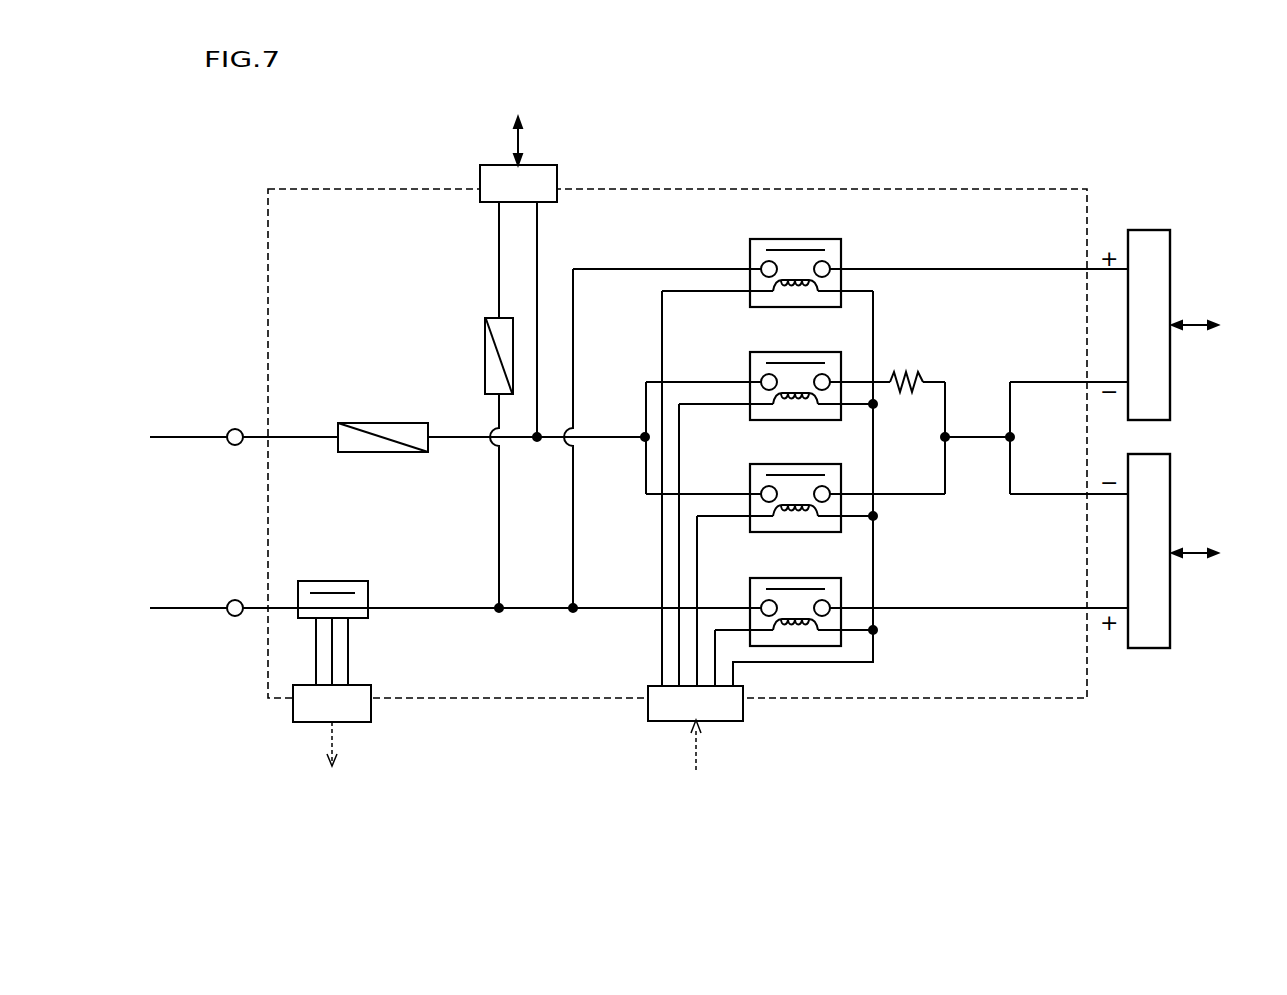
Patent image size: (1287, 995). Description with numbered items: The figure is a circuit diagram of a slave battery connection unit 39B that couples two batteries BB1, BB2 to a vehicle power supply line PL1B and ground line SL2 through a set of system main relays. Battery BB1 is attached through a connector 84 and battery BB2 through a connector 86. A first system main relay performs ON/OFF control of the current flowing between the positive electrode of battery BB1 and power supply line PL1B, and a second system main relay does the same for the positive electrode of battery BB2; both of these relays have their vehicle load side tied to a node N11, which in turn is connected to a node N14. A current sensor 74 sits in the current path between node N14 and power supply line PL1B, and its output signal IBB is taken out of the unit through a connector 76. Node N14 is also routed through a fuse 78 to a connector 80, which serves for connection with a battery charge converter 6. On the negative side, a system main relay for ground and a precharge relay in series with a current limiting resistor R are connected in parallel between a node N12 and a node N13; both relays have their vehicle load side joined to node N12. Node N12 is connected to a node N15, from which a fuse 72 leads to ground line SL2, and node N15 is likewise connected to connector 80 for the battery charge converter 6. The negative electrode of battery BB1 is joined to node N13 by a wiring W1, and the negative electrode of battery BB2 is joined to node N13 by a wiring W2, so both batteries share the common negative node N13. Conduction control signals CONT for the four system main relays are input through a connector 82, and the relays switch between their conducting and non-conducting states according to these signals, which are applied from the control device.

The battery charge converter 6 is at (518, 128).
The slave battery connection unit 39B is at (374, 187).
The fuse 72 is at (383, 421).
The current sensor 74 is at (334, 580).
The connector 76 is at (293, 708).
The fuse 78 is at (484, 356).
The connector 80 is at (557, 178).
The connector 82 is at (743, 708).
The connector 84 is at (1150, 229).
The connector 86 is at (1147, 650).
The node N11 is at (576, 605).
The node N12 is at (640, 433).
The node N13 is at (950, 434).
The node N14 is at (499, 616).
The node N15 is at (538, 445).
The current limiting resistor R is at (905, 372).
The wiring W1 is at (1045, 380).
The wiring W2 is at (1045, 497).
The ground line SL2 is at (187, 436).
The power supply line PL1B is at (191, 607).
The battery BB1 is at (1220, 325).
The battery BB2 is at (1220, 553).
The output signal IBB is at (330, 760).
The conduction control signals CONT is at (742, 758).